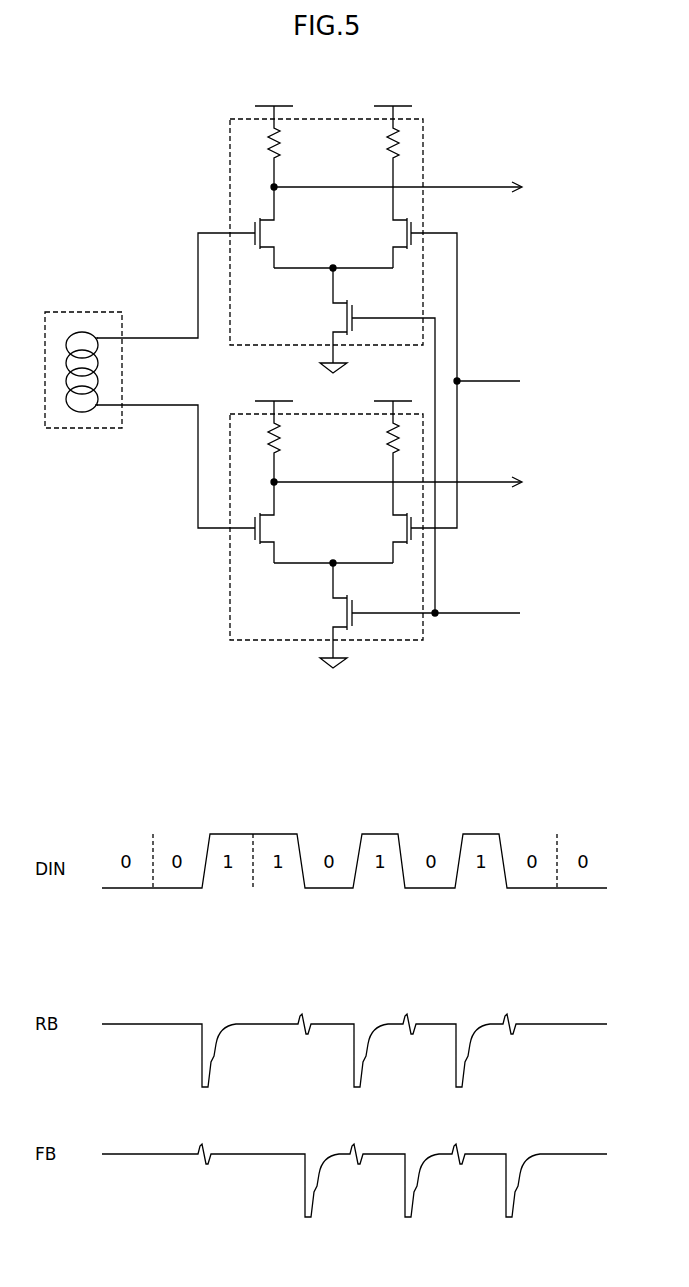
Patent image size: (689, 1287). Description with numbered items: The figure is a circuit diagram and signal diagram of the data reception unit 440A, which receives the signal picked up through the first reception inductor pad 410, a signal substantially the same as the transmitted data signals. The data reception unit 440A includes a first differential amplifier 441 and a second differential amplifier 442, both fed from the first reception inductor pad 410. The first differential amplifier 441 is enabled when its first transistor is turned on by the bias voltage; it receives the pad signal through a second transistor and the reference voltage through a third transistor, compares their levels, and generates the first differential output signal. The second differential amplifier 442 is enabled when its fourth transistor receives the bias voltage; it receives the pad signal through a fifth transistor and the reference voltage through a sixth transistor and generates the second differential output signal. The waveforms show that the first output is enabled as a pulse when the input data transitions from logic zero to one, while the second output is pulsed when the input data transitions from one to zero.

The data reception unit 440A is at (521, 82).
The first differential amplifier 441 is at (230, 153).
The second differential amplifier 442 is at (230, 598).
The first reception inductor pad 410 is at (92, 312).